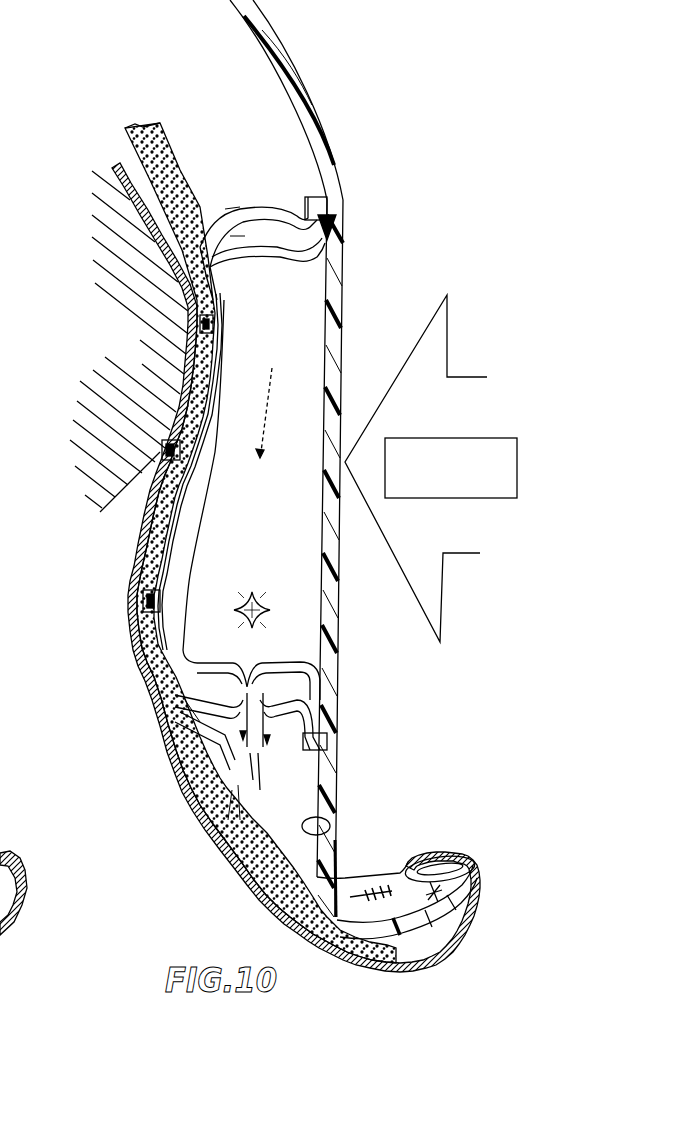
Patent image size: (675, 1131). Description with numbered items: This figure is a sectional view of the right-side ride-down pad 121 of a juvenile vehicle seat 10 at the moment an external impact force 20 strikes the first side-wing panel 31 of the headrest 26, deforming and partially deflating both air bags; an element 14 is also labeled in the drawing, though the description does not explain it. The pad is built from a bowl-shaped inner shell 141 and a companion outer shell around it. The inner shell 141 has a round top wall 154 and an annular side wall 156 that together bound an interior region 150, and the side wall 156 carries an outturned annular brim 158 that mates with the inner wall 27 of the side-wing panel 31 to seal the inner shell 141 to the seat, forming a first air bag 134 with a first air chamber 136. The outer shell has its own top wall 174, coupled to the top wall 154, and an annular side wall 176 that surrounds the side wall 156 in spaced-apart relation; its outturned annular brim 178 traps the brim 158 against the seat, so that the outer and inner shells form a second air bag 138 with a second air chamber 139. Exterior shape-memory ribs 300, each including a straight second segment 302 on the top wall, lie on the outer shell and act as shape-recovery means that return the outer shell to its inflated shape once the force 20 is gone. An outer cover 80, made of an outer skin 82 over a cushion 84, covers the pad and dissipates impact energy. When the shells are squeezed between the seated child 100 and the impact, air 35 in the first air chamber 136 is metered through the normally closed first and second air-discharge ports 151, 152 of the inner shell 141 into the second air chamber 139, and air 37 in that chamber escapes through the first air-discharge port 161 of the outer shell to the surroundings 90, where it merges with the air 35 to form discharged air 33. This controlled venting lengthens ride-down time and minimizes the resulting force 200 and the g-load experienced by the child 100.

The juvenile vehicle seat 10 is at (295, 50).
The seat shell 14 is at (348, 152).
The external impact force 20 is at (455, 433).
The headrest 26 is at (315, 90).
The inner wall 27 is at (332, 830).
The first side-wing panel 31 is at (342, 794).
The discharged air 33 is at (262, 762).
The air 35 is at (266, 423).
The air 37 is at (320, 687).
The outer cover 80 is at (378, 977).
The outer skin 82 is at (118, 165).
The cushion 84 is at (141, 125).
The surroundings 90 is at (270, 828).
The child 100 is at (120, 233).
The right-side ride-down pad 121 is at (240, 206).
The first air bag 134 is at (153, 563).
The first air chamber 136 is at (298, 537).
The second air bag 138 is at (190, 716).
The second air chamber 139 is at (276, 238).
The inner shell 141 is at (224, 243).
The interior region 150 is at (300, 395).
The first air-discharge port 151 is at (322, 661).
The second air-discharge port 152 is at (262, 603).
The top wall 154 is at (223, 340).
The side wall 156 is at (251, 258).
The annular brim 158 is at (320, 208).
The first air-discharge port 161 is at (185, 803).
The top wall 174 is at (203, 298).
The side wall 176 is at (284, 207).
The annular brim 178 is at (309, 197).
The resulting force 200 is at (212, 380).
The exterior shape-memory rib 300 is at (147, 615).
The second segment 302 is at (158, 455).